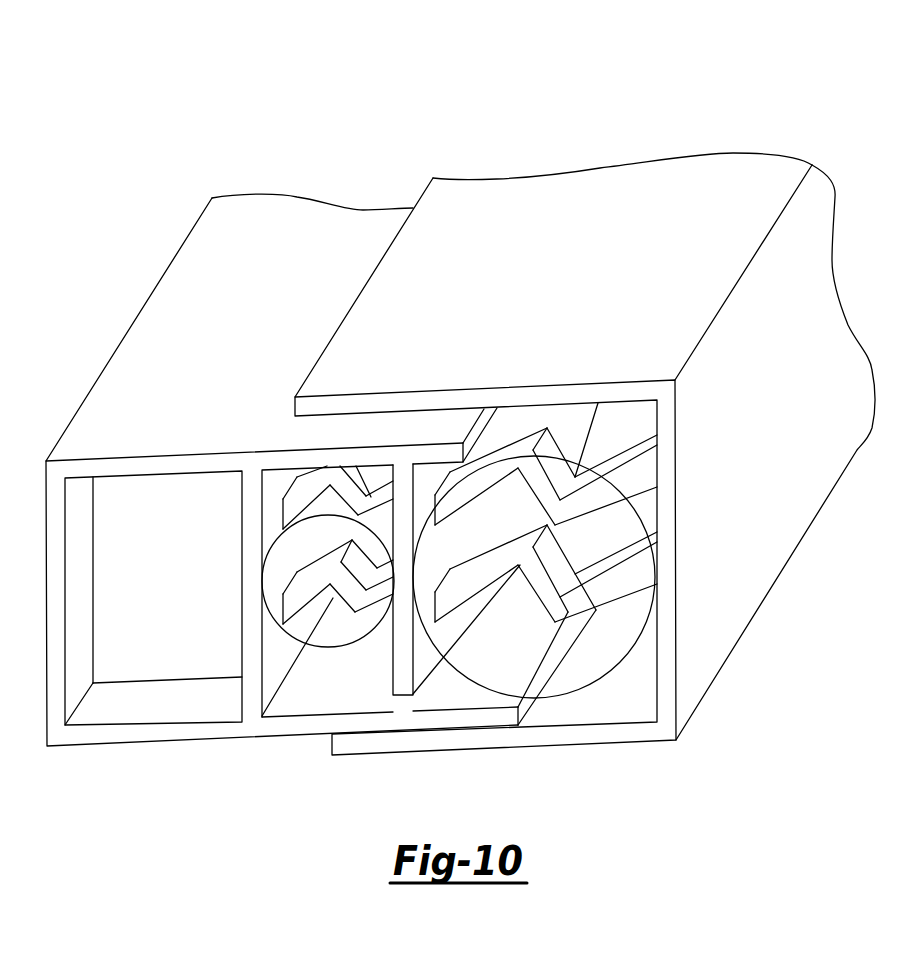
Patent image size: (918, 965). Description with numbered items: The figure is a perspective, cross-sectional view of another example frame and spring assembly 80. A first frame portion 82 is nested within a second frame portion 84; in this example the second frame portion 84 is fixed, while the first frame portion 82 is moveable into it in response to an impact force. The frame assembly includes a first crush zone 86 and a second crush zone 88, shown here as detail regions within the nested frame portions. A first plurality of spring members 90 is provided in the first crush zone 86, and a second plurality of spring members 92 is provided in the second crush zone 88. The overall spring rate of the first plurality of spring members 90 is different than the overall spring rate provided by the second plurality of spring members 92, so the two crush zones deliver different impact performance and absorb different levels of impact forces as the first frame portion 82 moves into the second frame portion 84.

The spring assembly 80 is at (686, 100).
The first frame portion 82 is at (182, 305).
The second frame portion 84 is at (640, 311).
The first crush zone 86 is at (622, 623).
The second crush zone 88 is at (285, 565).
The first plurality of spring members 90 is at (585, 657).
The second plurality of spring members 92 is at (333, 625).